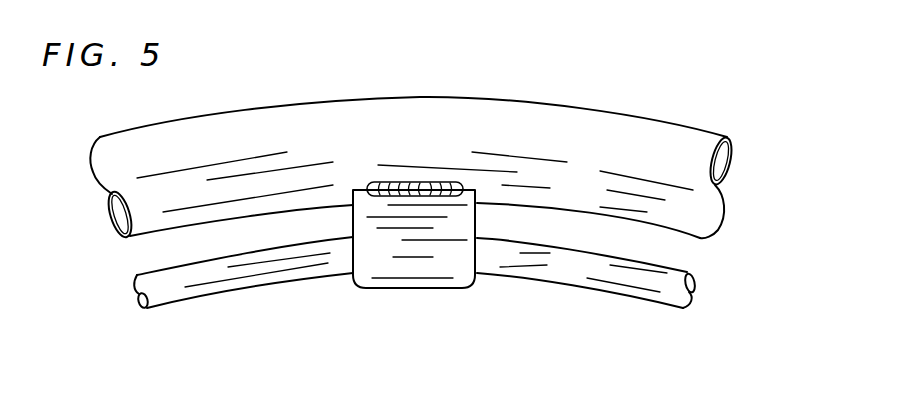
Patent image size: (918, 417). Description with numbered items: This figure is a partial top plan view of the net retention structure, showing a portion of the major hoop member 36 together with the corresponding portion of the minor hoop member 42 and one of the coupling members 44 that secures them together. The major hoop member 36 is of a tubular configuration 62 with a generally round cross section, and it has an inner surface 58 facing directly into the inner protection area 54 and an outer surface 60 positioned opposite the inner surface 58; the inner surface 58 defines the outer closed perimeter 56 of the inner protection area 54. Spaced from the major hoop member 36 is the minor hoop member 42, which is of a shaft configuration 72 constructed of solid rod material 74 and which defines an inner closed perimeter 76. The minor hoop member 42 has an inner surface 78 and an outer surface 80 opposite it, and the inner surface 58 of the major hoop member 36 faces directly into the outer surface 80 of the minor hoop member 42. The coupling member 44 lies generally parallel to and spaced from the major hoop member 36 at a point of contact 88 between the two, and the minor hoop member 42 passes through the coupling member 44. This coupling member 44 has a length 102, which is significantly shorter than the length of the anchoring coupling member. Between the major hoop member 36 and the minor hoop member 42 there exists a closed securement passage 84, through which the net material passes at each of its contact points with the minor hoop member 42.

The major hoop member 36 is at (678, 123).
The minor hoop member 42 is at (643, 300).
The coupling member 44 is at (453, 290).
The inner protection area 54 is at (692, 257).
The outer closed perimeter 56 is at (572, 237).
The inner surface 58 is at (167, 227).
The outer surface 60 is at (590, 108).
The tubular configuration 62 is at (470, 97).
The shaft configuration 72 is at (690, 306).
The solid rod material 74 is at (173, 303).
The inner closed perimeter 76 is at (321, 288).
The inner surface 78 is at (233, 292).
The outer surface 80 is at (613, 250).
The closed securement passage 84 is at (538, 223).
The point of contact 88 is at (365, 185).
The length 102 is at (415, 290).